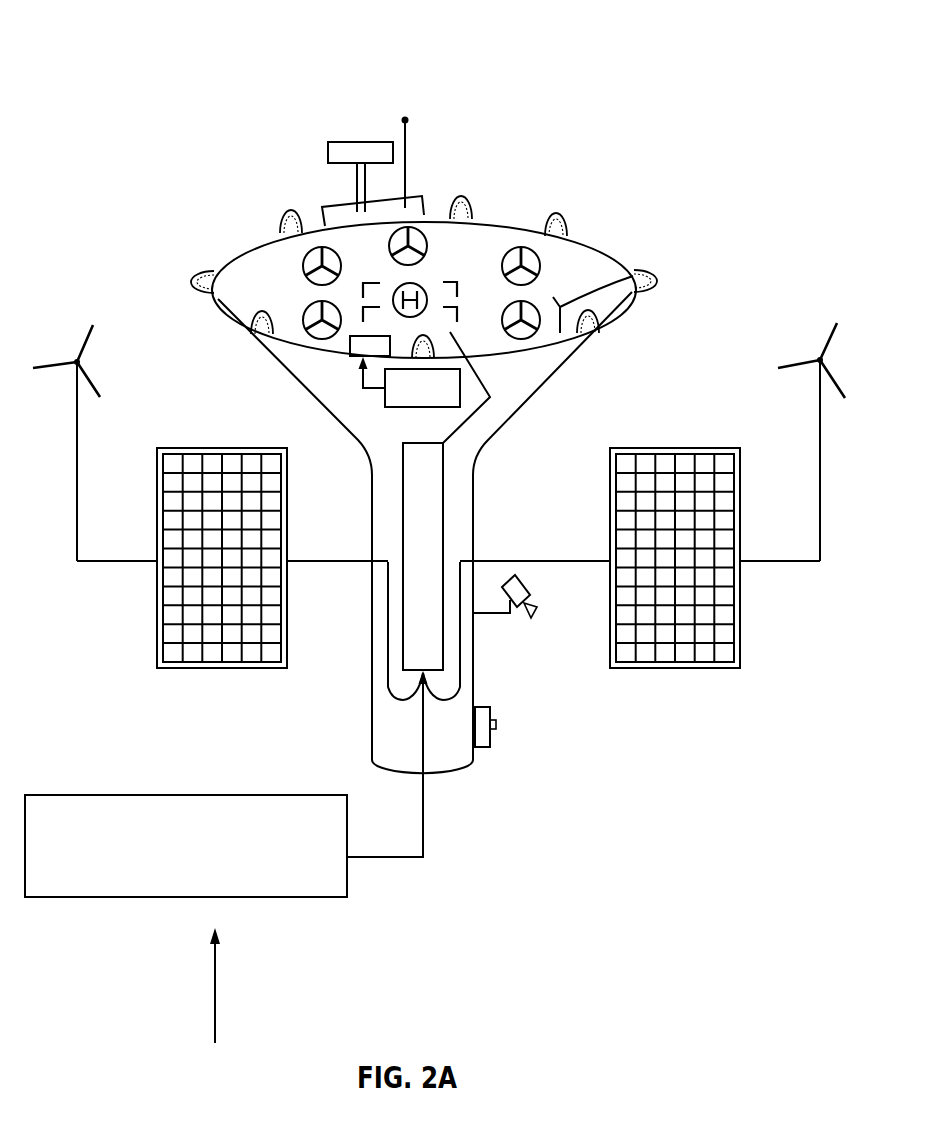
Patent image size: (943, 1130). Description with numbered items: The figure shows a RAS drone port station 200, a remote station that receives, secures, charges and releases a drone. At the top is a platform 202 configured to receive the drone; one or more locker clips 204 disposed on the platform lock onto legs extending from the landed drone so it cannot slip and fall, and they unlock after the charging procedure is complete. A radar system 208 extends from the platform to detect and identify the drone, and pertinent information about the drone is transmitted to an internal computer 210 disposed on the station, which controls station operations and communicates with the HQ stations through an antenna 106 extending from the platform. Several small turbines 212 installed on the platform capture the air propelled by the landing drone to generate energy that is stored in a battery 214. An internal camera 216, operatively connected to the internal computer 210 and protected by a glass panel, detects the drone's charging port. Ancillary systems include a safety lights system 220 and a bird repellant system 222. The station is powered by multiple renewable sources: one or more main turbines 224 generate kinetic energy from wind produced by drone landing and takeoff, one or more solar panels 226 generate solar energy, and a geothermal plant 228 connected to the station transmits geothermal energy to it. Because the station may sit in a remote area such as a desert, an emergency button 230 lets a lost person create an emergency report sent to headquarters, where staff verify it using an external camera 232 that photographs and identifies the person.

The RAS drone port station 200 is at (157, 45).
The radar system 208 is at (366, 142).
The antenna 106 is at (408, 162).
The platform 202 is at (422, 287).
The locker clips 204 is at (447, 278).
The small turbines 212 is at (303, 312).
The safety lights system 220 is at (209, 280).
The bird repellant system 222 is at (644, 279).
The internal camera 216 is at (348, 353).
The internal computer 210 is at (385, 405).
The battery 214 is at (445, 502).
The external camera 232 is at (537, 618).
The emergency button 230 is at (497, 725).
The solar panels 226 is at (742, 600).
The main turbines 224 is at (817, 357).
The geothermal plant 228 is at (93, 794).